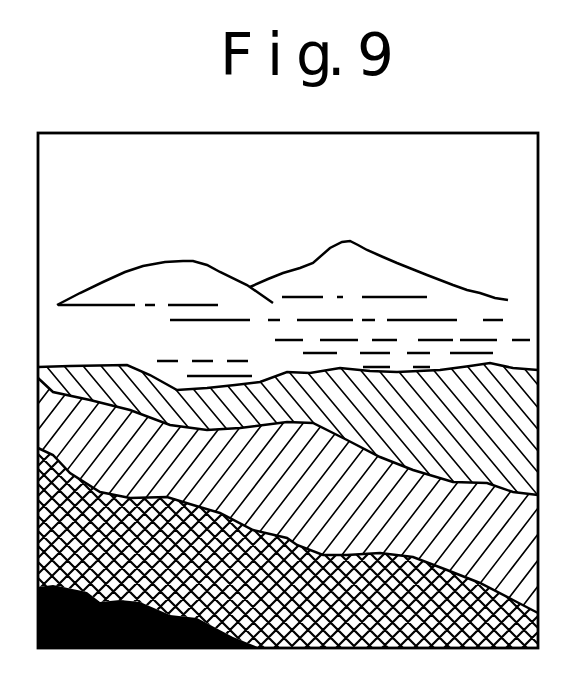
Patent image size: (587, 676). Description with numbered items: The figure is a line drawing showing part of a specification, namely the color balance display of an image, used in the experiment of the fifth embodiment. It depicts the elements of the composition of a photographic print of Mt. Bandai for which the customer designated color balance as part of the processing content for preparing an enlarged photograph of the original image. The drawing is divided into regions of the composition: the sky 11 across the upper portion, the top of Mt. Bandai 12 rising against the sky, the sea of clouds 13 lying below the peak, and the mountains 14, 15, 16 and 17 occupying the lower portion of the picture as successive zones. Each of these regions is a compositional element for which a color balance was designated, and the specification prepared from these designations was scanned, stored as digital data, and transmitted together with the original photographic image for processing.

The sky 11 is at (288, 390).
The top of Mt. Bandai 12 is at (405, 283).
The sea of clouds 13 is at (294, 336).
The mountains 14 is at (293, 430).
The mountains 15 is at (293, 495).
The mountains 16 is at (293, 545).
The mountains 17 is at (149, 616).